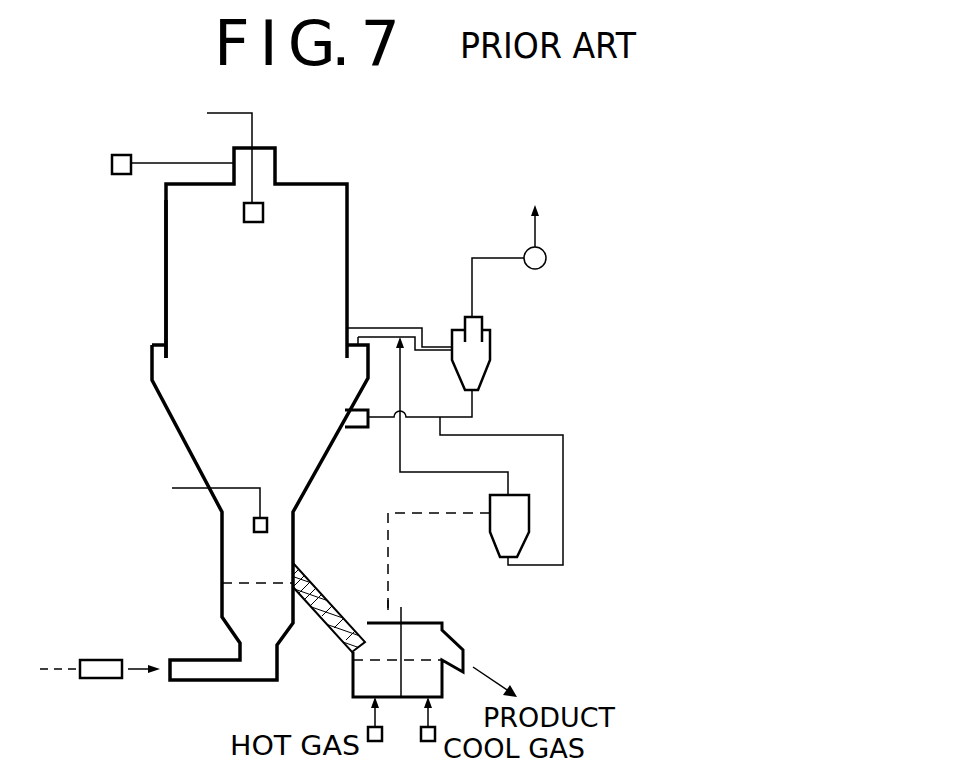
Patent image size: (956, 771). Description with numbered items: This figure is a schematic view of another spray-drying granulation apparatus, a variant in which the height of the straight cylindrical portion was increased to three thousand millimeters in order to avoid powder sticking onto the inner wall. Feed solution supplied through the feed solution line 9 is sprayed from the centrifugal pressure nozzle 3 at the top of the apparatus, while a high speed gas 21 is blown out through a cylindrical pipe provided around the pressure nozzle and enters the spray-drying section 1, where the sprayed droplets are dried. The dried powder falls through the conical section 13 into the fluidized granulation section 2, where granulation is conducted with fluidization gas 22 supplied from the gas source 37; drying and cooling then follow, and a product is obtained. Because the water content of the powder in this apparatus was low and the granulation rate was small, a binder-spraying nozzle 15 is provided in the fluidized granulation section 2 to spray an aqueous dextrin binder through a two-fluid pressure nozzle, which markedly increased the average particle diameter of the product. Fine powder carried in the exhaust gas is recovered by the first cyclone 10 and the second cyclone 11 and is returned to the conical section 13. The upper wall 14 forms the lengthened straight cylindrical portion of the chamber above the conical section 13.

The spray-drying section 1 is at (336, 196).
The fluidized granulation section 2 is at (222, 575).
The centrifugal pressure nozzle 3 is at (263, 212).
The feed solution line 9 is at (229, 141).
The first cyclone 10 is at (490, 355).
The second cyclone 11 is at (529, 522).
The conical section 13 is at (182, 442).
The upper cylindrical wall 14 is at (166, 270).
The binder-spraying nozzle 15 is at (254, 527).
The high speed gas 21 is at (112, 163).
The fluidization gas 22 is at (145, 646).
The gas source 37 is at (108, 678).